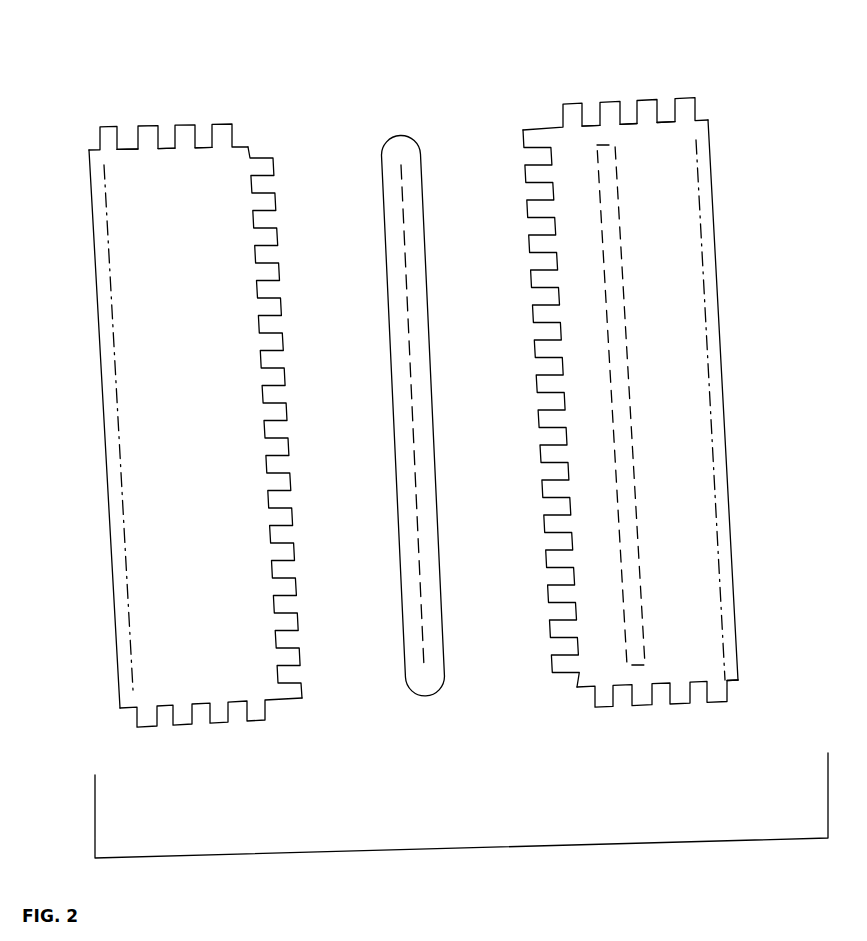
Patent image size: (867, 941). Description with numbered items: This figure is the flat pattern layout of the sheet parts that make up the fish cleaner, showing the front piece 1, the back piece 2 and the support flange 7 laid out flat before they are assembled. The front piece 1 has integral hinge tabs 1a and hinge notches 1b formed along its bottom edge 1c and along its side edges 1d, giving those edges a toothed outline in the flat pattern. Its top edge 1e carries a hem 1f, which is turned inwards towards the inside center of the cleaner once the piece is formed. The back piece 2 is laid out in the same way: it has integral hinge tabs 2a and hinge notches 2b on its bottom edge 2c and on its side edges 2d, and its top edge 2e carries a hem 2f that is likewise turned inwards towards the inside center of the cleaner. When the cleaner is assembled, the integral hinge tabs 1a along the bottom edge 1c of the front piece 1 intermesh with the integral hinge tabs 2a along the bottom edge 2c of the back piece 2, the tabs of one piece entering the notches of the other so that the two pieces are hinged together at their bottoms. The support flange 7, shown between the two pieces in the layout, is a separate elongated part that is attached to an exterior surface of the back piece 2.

The front piece 1 is at (197, 430).
The integral hinge tabs 1a is at (104, 126).
The hinge notches 1b is at (158, 710).
The bottom edge 1c is at (246, 139).
The side edges 1d is at (165, 148).
The top edge 1e is at (90, 160).
The hem 1f is at (116, 424).
The back piece 2 is at (635, 411).
The integral hinge tabs 2a is at (570, 104).
The hinge notches 2b is at (622, 685).
The bottom edge 2c is at (548, 160).
The side edges 2d is at (663, 128).
The top edge 2e is at (718, 144).
The hem 2f is at (718, 457).
The support flange 7 is at (401, 322).